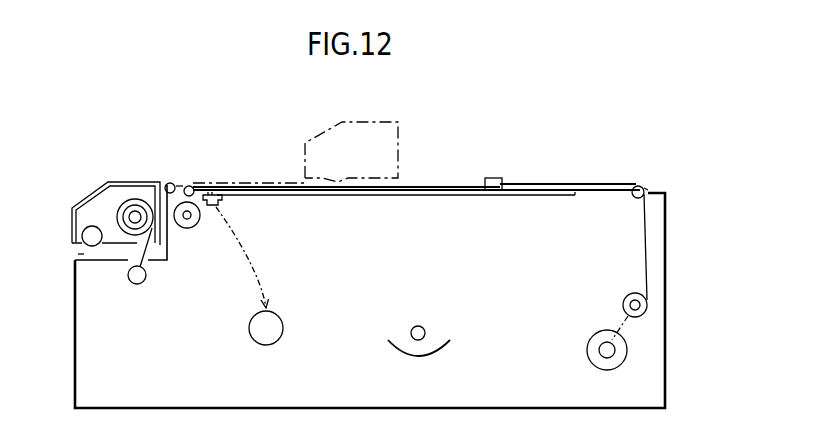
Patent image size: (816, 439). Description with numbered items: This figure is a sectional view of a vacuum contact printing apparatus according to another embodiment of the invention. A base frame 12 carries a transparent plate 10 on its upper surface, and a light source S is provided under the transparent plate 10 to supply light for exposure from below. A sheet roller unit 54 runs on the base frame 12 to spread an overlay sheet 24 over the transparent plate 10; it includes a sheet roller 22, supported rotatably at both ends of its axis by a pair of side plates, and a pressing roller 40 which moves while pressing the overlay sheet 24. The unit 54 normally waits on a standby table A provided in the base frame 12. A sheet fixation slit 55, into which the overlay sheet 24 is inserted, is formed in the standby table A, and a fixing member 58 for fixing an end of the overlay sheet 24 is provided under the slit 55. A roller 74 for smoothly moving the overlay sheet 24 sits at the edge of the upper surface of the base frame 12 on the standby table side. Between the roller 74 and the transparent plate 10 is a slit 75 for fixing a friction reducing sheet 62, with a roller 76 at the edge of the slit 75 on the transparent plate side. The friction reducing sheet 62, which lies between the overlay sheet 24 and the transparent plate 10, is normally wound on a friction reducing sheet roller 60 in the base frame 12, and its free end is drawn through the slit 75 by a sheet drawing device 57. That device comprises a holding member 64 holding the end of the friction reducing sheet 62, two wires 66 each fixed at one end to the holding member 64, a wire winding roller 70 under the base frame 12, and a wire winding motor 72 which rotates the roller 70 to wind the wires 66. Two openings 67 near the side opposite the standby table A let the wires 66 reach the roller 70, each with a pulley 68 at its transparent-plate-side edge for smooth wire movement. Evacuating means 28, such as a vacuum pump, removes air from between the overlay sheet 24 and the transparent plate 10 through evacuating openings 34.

The transparent plate 10 is at (485, 197).
The base frame 12 is at (666, 375).
The sheet roller 22 is at (133, 199).
The overlay sheet 24 is at (268, 181).
The evacuating means 28 is at (283, 329).
The evacuating openings 34 is at (222, 200).
The pressing roller 40 is at (82, 236).
The sheet roller unit 54 is at (88, 178).
The sheet fixation slit 55 is at (148, 268).
The sheet drawing device 57 is at (652, 258).
The fixing member 58 is at (137, 284).
The friction reducing sheet roller 60 is at (194, 227).
The friction reducing sheet 62 is at (434, 186).
The holding member 64 is at (494, 178).
The wires 66 is at (581, 184).
The openings 67 is at (648, 188).
The pulley 68 is at (636, 198).
The wire winding roller 70 is at (630, 297).
The wire winding motor 72 is at (587, 340).
The roller 74 is at (166, 184).
The slit 75 is at (181, 182).
The roller 76 is at (192, 186).
The standby table A is at (80, 255).
The light source S is at (422, 327).